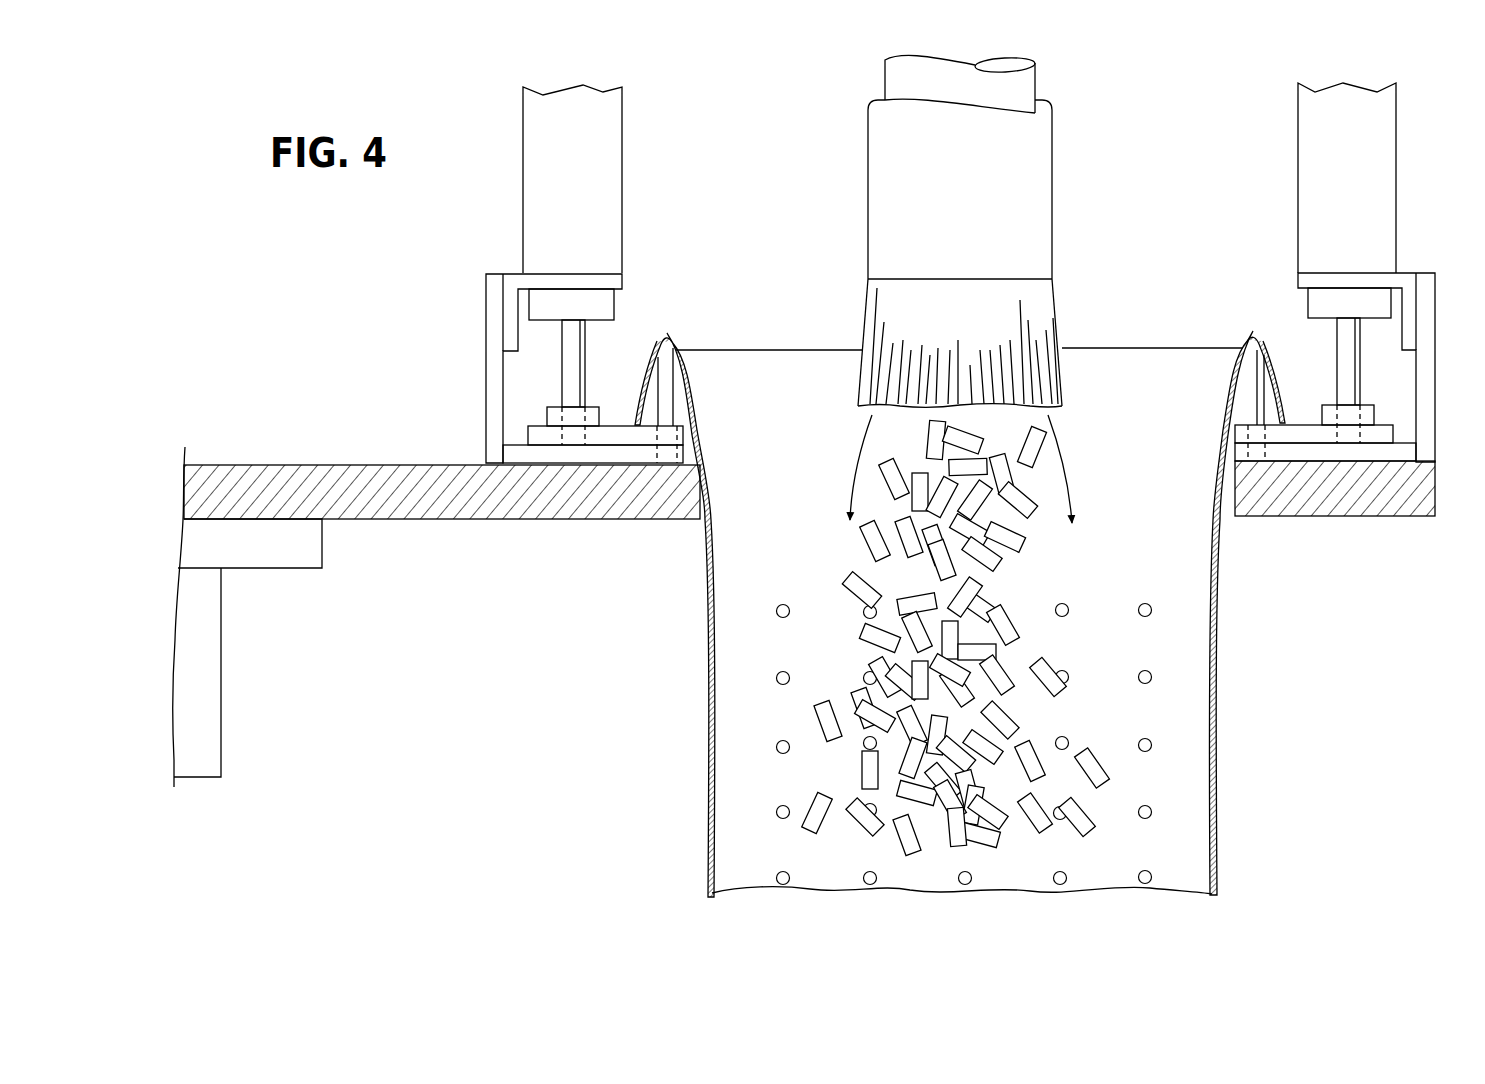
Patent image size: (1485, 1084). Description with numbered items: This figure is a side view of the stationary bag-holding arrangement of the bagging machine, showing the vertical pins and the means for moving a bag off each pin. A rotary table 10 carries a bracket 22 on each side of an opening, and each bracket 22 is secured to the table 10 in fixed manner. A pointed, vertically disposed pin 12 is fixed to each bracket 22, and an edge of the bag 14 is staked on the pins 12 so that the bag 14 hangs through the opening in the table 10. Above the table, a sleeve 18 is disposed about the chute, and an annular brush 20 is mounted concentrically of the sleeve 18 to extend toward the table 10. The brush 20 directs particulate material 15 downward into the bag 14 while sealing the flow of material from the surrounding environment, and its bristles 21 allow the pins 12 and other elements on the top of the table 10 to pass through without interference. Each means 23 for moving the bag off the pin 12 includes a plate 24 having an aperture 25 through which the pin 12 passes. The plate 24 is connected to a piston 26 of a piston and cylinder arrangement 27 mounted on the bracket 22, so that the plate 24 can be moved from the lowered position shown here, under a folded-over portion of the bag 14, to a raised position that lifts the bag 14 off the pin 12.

The table 10 is at (495, 512).
The pin 12 is at (670, 358).
The bag 14 is at (707, 697).
The particulate material 15 is at (1020, 645).
The sleeve 18 is at (1030, 90).
The annular brush 20 is at (1043, 187).
The bristles 21 is at (1053, 323).
The bracket 22 is at (487, 436).
The means for moving a bag off the pin 23 is at (650, 304).
The plate 24 is at (625, 432).
The aperture 25 is at (678, 437).
The piston 26 is at (580, 352).
The piston and cylinder arrangement 27 is at (617, 163).